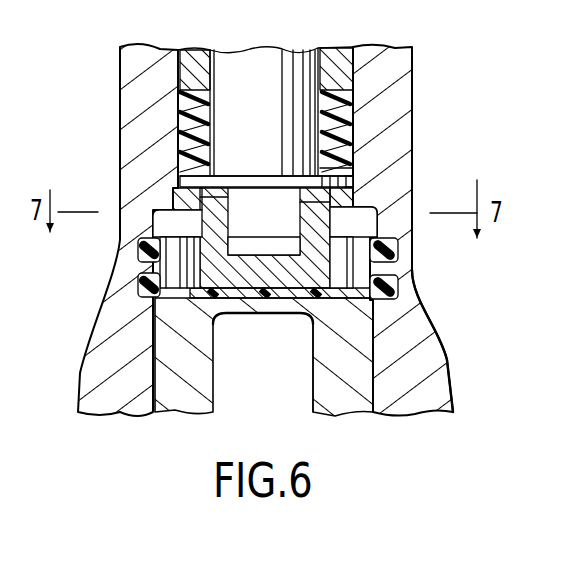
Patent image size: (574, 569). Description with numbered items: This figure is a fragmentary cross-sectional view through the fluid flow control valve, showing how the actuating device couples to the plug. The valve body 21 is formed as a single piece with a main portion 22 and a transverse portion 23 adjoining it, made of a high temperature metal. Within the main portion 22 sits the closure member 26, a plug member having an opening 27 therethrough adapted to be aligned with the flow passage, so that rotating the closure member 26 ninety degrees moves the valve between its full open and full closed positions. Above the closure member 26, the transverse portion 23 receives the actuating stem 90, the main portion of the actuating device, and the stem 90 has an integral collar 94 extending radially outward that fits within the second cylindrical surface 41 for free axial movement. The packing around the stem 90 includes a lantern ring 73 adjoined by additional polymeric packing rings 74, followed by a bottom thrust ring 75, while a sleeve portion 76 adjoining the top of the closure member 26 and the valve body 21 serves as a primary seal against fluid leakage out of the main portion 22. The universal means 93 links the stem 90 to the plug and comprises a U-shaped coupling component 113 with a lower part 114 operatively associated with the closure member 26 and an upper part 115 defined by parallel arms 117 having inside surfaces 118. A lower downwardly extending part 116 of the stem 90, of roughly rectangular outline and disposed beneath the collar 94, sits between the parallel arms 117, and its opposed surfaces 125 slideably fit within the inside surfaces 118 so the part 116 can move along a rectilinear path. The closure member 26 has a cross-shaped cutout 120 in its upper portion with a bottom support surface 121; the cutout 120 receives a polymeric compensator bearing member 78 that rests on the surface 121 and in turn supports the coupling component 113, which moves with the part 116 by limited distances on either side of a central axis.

The valve body 21 is at (416, 76).
The main portion 22 is at (430, 326).
The transverse portion 23 is at (128, 73).
The closure member 26 is at (185, 398).
The opening 27 is at (303, 400).
The second cylindrical surface 41 is at (338, 58).
The lantern ring 73 is at (192, 50).
The polymeric packing rings 74 is at (360, 122).
The bottom thrust ring 75 is at (342, 163).
The sleeve portion 76 is at (390, 257).
The compensator bearing member 78 is at (278, 304).
The actuating stem 90 is at (268, 60).
The universal means 93 is at (356, 185).
The collar 94 is at (200, 180).
The U-shaped coupling component 113 is at (190, 279).
The lower part 114 is at (152, 300).
The upper part 115 is at (198, 196).
The lower downwardly extending part 116 is at (362, 195).
The parallel arms 117 is at (195, 226).
The inside surfaces 118 is at (300, 220).
The cross-shaped cutout 120 is at (170, 268).
The bottom support surface 121 is at (362, 272).
The opposed surfaces 125 is at (188, 199).